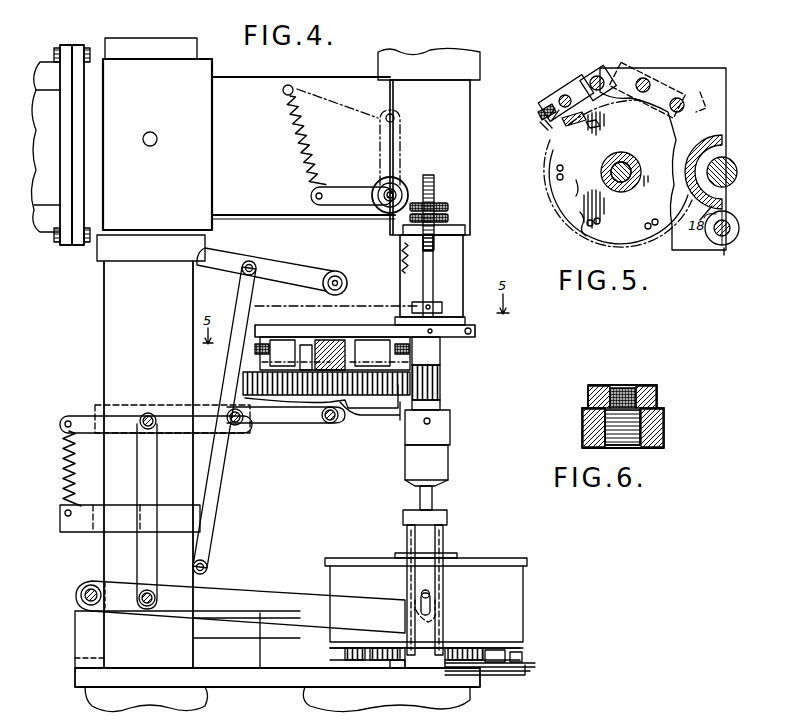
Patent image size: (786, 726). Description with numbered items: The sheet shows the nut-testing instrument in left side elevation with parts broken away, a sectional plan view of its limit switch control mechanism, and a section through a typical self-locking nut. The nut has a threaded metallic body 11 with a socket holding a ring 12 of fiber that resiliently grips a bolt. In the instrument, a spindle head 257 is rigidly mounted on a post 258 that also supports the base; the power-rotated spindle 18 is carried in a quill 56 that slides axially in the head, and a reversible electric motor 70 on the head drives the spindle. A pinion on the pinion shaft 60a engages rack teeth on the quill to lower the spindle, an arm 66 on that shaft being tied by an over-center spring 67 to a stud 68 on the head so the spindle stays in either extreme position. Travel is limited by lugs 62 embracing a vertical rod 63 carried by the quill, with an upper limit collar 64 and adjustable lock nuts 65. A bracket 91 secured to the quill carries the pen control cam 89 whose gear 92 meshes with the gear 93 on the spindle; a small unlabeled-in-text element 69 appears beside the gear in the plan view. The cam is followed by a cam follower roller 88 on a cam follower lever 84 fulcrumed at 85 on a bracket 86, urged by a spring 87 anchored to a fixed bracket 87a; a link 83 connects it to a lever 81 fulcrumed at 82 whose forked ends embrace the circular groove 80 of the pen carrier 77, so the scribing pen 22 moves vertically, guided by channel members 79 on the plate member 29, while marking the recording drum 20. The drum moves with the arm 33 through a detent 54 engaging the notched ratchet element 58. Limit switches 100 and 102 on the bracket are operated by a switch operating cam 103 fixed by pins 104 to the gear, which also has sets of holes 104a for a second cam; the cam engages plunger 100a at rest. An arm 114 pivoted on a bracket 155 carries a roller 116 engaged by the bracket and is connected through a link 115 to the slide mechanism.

In FIG. 4, the reversible electric motor 70 is at (36, 226).
In FIG. 4, the spindle head 257 is at (243, 141).
In FIG. 4, the bracket 155 is at (97, 250).
In FIG. 4, the stud 68 is at (283, 91).
In FIG. 4, the over-center spring 67 is at (298, 158).
In FIG. 4, the arm 66 is at (355, 183).
In FIG. 4, the pinion shaft 60a is at (396, 182).
In FIG. 4, the vertical rod 63 is at (436, 194).
In FIG. 5, the vertical rod 63 is at (720, 244).
In FIG. 4, the lock nuts 65 is at (452, 209).
In FIG. 4, the lugs 62 is at (448, 230).
In FIG. 4, the quill 56 is at (452, 262).
In FIG. 5, the quill 56 is at (702, 150).
In FIG. 4, the upper limit collar 64 is at (446, 300).
In FIG. 4, the arm 114 is at (294, 264).
In FIG. 4, the roller 116 is at (343, 275).
In FIG. 4, the link 115 is at (240, 281).
In FIG. 4, the bracket 91 is at (368, 322).
In FIG. 5, the bracket 91 is at (710, 78).
In FIG. 4, the gear 92 is at (238, 368).
In FIG. 5, the gear 92 is at (566, 232).
In FIG. 4, the spindle 18 is at (441, 352).
In FIG. 5, the spindle 18 is at (603, 174).
In FIG. 4, the gear 93 is at (442, 386).
In FIG. 4, the pen control cam 89 is at (397, 420).
In FIG. 4, the cam follower lever 84 is at (310, 425).
In FIG. 4, the fulcrum 85 is at (238, 428).
In FIG. 4, the cam follower roller 88 is at (332, 426).
In FIG. 4, the bracket 86 is at (100, 408).
In FIG. 4, the spring 87 is at (62, 470).
In FIG. 4, the fixed bracket 87a is at (64, 532).
In FIG. 4, the link 83 is at (137, 490).
In FIG. 4, the post 258 is at (104, 330).
In FIG. 4, the lever 81 is at (294, 598).
In FIG. 4, the fulcrum 82 is at (80, 596).
In FIG. 4, the channel members 79 is at (448, 544).
In FIG. 4, the recording drum 20 is at (530, 606).
In FIG. 4, the pen carrier 77 is at (417, 590).
In FIG. 4, the scribing pen 22 is at (432, 600).
In FIG. 4, the circular groove 80 is at (430, 628).
In FIG. 4, the ratchet element 58 is at (368, 660).
In FIG. 4, the detent 54 is at (538, 654).
In FIG. 4, the arm 33 is at (512, 672).
In FIG. 4, the plate member 29 is at (474, 686).
In FIG. 5, the limit switch 100 is at (560, 92).
In FIG. 5, the plunger 100a is at (548, 124).
In FIG. 5, the limit switch 102 is at (683, 76).
In FIG. 5, the switch operating cam 103 is at (590, 128).
In FIG. 5, the pins 104 is at (575, 126).
In FIG. 5, the sets of holes 104a is at (580, 210).
In FIG. 5, the pin 69 is at (728, 258).
In FIG. 6, the threaded metallic body 11 is at (665, 408).
In FIG. 6, the ring 12 is at (658, 395).